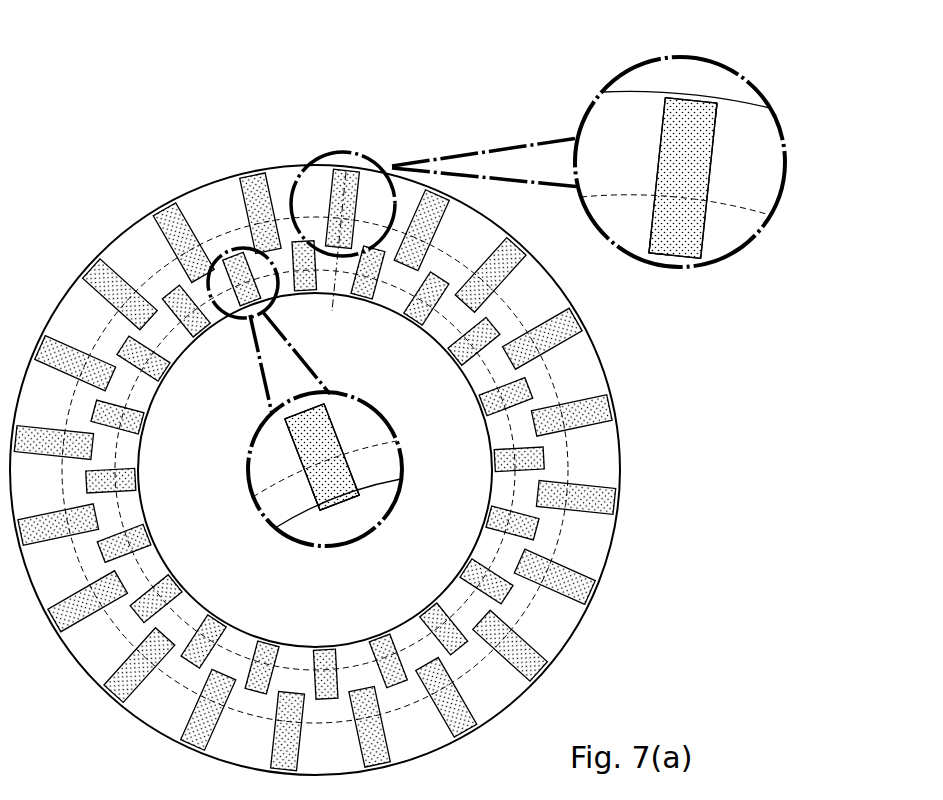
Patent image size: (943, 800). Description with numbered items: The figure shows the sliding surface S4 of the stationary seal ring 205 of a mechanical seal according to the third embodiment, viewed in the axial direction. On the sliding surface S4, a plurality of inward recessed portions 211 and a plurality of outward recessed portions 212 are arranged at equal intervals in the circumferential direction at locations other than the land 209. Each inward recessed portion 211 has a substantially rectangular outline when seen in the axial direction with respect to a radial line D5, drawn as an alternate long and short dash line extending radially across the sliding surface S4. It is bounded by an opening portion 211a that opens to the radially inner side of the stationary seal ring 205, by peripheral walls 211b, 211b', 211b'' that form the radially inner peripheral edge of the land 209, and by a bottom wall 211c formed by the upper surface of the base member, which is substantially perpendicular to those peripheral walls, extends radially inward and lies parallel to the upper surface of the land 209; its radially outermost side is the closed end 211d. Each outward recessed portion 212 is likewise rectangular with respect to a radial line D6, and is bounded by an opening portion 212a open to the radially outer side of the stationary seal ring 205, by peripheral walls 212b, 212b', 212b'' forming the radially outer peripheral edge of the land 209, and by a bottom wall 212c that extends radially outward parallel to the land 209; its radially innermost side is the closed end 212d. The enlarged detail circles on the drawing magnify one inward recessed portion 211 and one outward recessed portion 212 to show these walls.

The stationary seal ring 205 is at (156, 184).
The land 209 is at (132, 240).
The inward recessed portion 211 is at (252, 326).
The opening portion 211a is at (352, 500).
The peripheral wall 211b is at (409, 449).
The peripheral wall 211b' is at (277, 530).
The peripheral wall 211b'' is at (374, 398).
The bottom wall 211c is at (328, 507).
The closed end 211d is at (292, 437).
The outward recessed portion 212 is at (363, 151).
The opening portion 212a is at (683, 97).
The peripheral wall 212b is at (787, 180).
The peripheral wall 212b' is at (577, 170).
The peripheral wall 212b'' is at (616, 261).
The bottom wall 212c is at (717, 103).
The closed end 212d is at (677, 259).
The sliding surface S4 is at (260, 161).
The radial line D5 is at (268, 349).
The radial line D6 is at (360, 148).